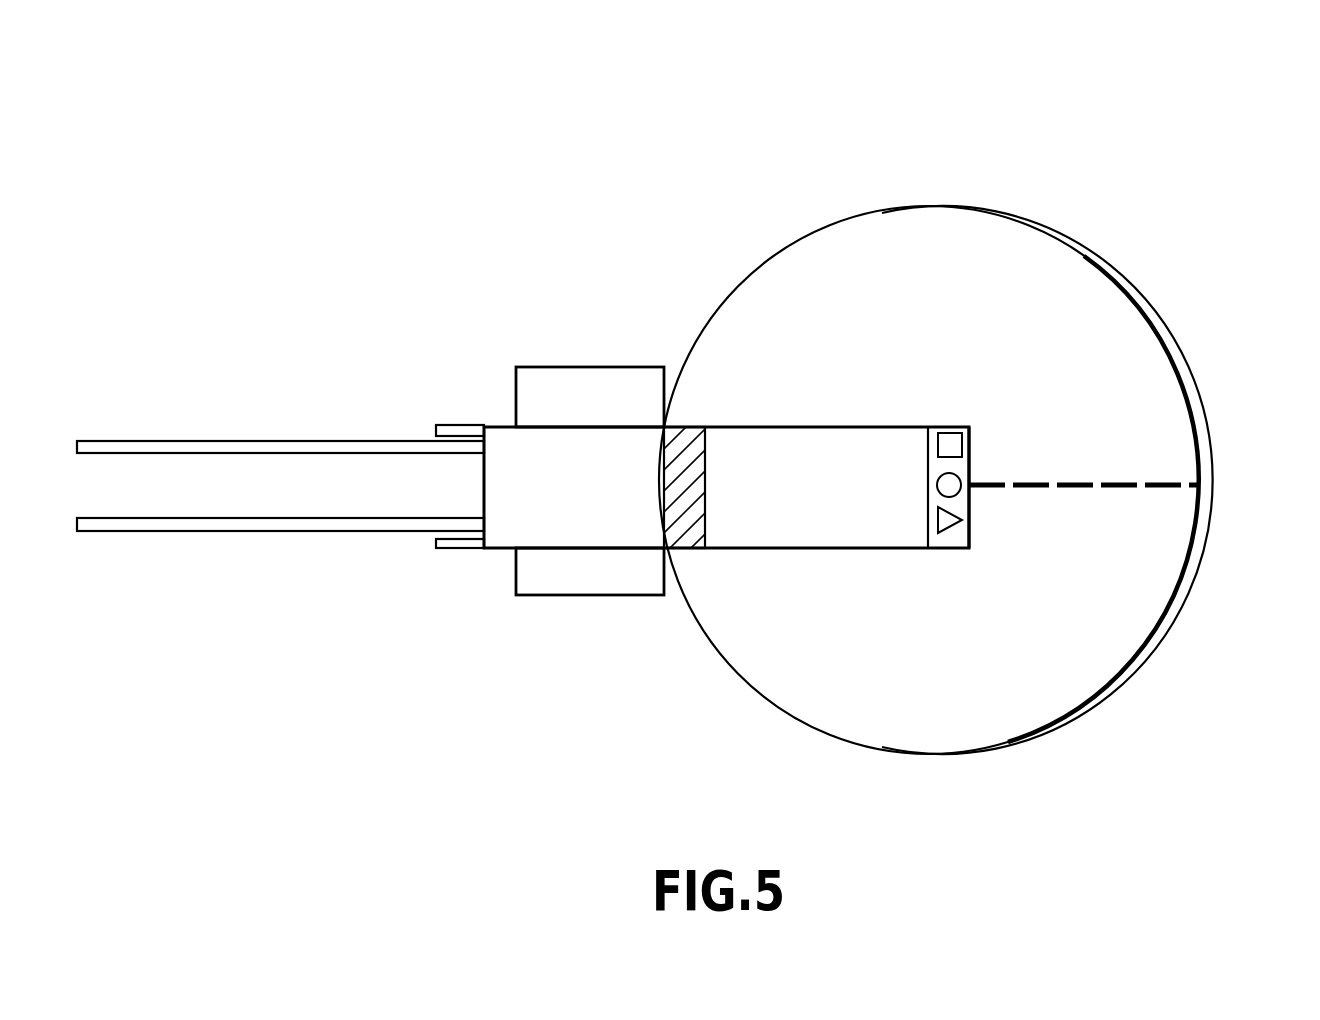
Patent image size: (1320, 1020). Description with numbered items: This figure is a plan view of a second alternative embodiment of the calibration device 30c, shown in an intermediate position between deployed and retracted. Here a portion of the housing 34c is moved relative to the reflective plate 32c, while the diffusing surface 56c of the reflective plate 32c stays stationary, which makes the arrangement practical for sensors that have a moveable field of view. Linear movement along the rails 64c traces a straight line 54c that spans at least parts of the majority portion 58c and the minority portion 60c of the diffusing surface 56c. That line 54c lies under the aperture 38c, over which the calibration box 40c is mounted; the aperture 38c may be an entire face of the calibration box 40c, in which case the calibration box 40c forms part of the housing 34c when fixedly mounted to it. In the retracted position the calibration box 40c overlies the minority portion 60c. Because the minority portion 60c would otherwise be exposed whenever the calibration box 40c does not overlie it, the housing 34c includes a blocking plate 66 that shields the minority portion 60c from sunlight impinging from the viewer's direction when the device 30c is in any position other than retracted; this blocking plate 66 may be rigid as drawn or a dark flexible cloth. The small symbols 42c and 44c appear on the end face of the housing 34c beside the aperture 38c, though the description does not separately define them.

The device 30c is at (1196, 98).
The reflective plate 32c is at (985, 705).
The housing 34c is at (967, 408).
The aperture 38c is at (948, 486).
The calibration box 40c is at (940, 543).
The indicator square 42c is at (945, 452).
The indicator triangle 44c is at (942, 512).
The straight line 54c is at (1128, 483).
The diffusing surface 56c is at (1127, 337).
The majority portion 58c is at (938, 247).
The minority portion 60c is at (687, 455).
The rails 64c is at (222, 447).
The blocking plate 66 is at (738, 524).